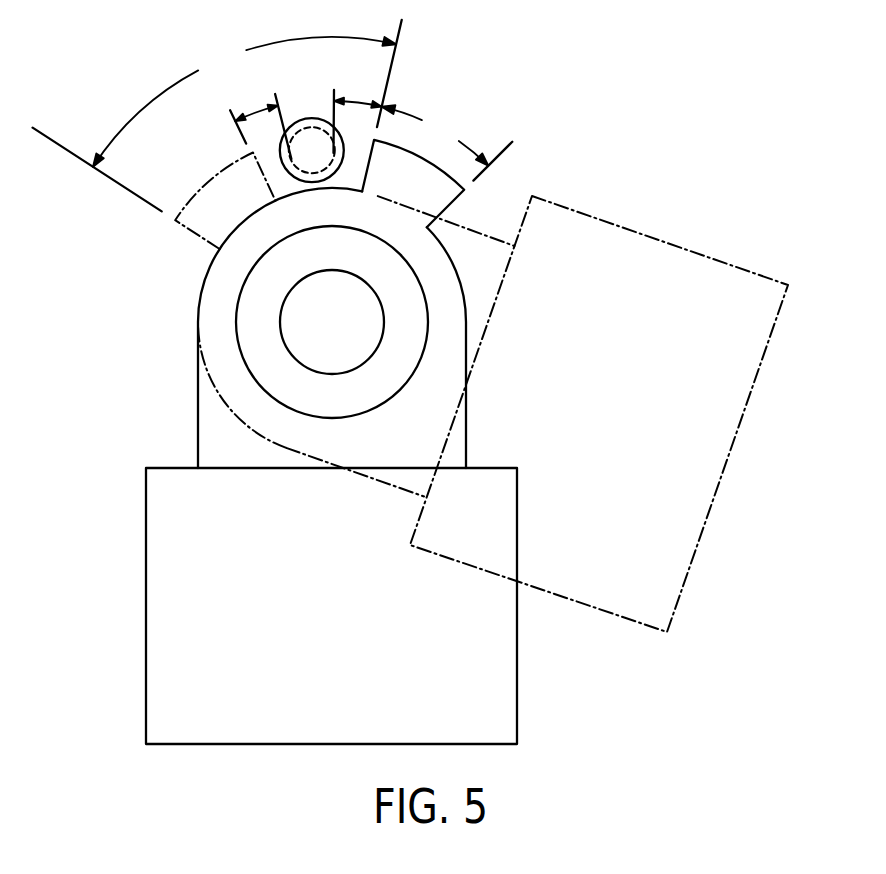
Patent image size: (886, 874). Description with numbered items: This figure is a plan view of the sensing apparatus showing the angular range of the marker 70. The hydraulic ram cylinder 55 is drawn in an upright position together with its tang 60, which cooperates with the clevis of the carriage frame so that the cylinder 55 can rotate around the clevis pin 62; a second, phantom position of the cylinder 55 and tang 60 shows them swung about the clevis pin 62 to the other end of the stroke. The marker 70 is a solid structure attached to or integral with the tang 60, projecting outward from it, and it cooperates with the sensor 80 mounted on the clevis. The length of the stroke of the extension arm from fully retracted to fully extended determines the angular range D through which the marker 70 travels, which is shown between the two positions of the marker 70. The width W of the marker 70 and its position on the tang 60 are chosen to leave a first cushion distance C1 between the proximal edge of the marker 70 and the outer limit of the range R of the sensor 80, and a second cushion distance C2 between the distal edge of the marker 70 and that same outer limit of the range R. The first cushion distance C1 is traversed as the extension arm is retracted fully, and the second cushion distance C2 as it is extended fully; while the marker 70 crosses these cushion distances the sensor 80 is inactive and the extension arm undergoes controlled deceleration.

The hydraulic ram cylinder 55 is at (147, 605).
The tang 60 is at (198, 393).
The clevis pin 62 is at (288, 308).
The marker 70 is at (449, 207).
The sensor 80 is at (299, 121).
The sensor range R is at (312, 137).
The angular range D is at (217, 116).
The width of the marker W is at (447, 142).
The first cushion distance C1 is at (363, 98).
The second cushion distance C2 is at (257, 113).